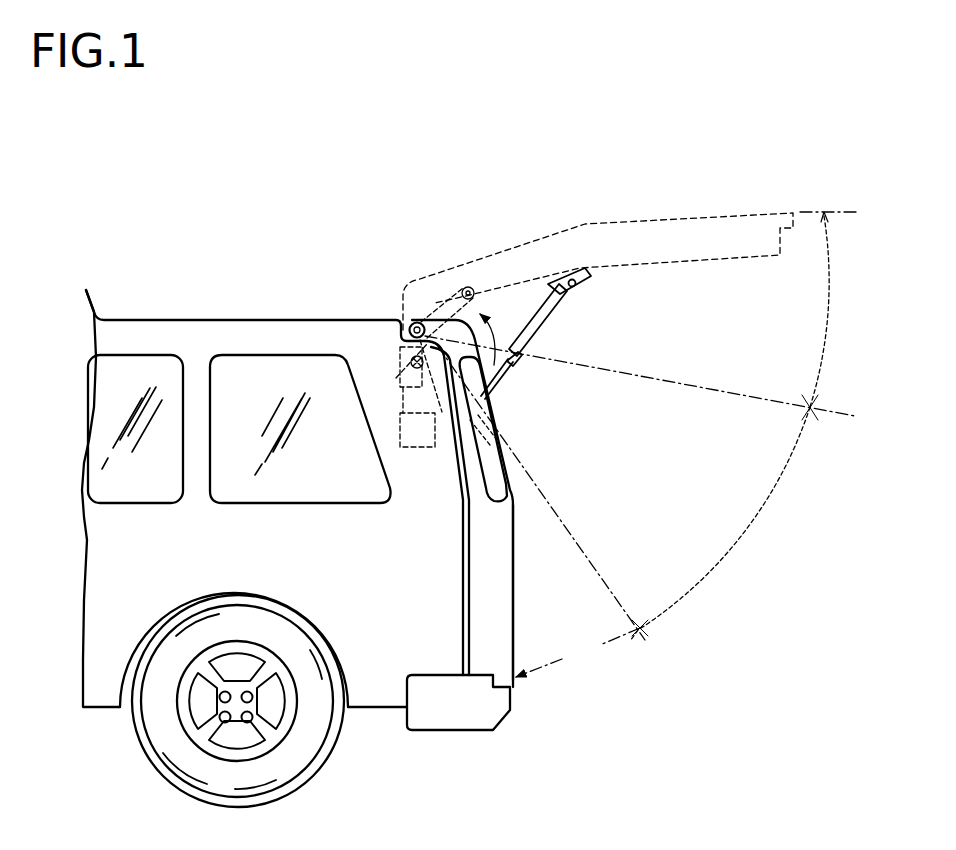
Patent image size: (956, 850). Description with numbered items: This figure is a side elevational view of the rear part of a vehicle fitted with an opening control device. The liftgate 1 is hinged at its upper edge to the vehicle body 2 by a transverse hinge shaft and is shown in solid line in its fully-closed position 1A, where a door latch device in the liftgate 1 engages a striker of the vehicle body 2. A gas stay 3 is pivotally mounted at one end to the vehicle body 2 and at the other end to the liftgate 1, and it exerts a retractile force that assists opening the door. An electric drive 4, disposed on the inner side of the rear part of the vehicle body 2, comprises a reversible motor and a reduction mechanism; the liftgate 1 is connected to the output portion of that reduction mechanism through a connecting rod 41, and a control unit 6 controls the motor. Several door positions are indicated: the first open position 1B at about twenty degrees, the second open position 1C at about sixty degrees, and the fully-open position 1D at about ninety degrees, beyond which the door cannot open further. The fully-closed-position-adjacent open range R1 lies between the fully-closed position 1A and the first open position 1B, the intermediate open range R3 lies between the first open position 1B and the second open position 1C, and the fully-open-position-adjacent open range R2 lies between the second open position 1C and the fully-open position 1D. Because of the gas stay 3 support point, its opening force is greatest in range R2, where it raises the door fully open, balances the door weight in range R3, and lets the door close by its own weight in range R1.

The liftgate 1 is at (516, 649).
The fully-closed position 1A is at (513, 612).
The first open position 1B is at (652, 636).
The second open position 1C is at (828, 410).
The fully-open position 1D is at (743, 212).
The vehicle body 2 is at (465, 566).
The gas stay 3 is at (553, 312).
The electric drive 4 is at (398, 361).
The connecting rod 41 is at (490, 447).
The control unit 6 is at (423, 450).
The fully-closed-position-adjacent open range R1 is at (578, 652).
The fully-open-position-adjacent open range R2 is at (824, 309).
The intermediate open range R3 is at (720, 524).